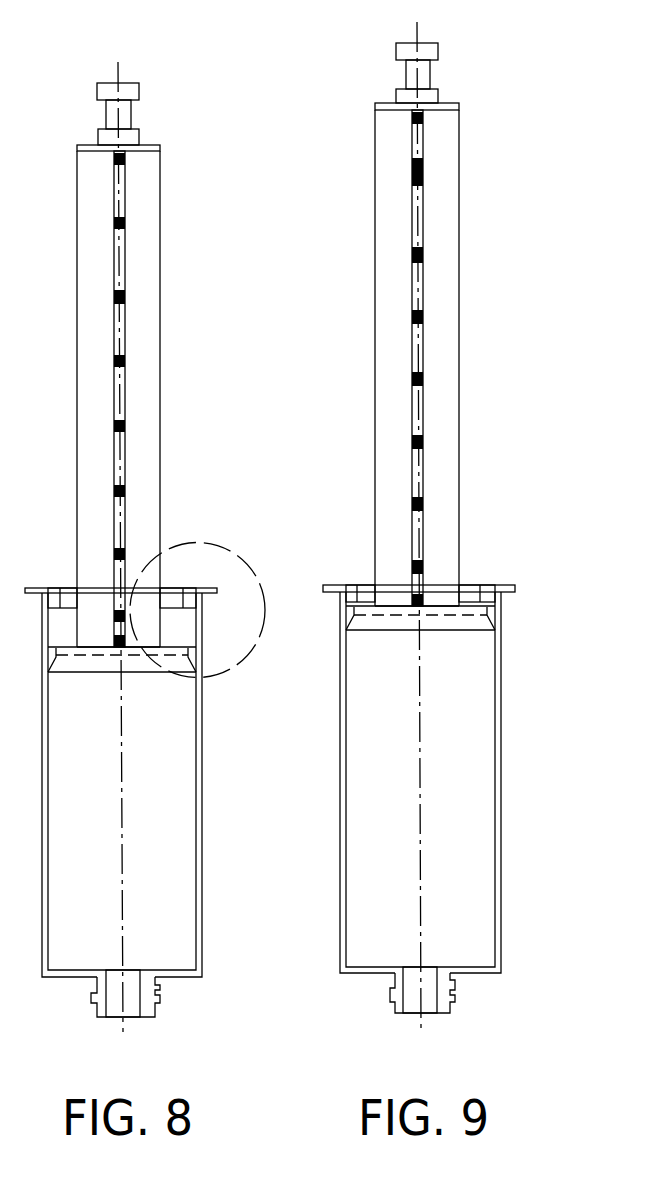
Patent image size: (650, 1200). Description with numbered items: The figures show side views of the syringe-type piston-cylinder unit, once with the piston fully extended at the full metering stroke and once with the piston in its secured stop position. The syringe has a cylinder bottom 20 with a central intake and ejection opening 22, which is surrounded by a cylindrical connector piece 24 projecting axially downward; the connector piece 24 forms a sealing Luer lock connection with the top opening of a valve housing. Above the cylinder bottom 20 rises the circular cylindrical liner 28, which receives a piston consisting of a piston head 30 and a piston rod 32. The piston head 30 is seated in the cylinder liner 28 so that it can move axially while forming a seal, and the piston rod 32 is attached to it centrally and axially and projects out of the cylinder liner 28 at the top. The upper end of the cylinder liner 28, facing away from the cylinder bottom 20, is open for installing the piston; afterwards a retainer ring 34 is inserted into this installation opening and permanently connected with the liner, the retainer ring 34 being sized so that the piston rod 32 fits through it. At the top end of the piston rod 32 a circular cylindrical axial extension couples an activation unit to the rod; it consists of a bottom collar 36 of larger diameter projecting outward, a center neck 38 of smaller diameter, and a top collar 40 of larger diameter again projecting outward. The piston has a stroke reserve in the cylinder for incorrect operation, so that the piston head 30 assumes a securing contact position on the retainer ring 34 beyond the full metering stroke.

In FIG. 8, the cylinder bottom 20 is at (73, 979).
In FIG. 9, the cylinder bottom 20 is at (372, 975).
In FIG. 8, the central intake and ejection opening 22 is at (128, 972).
In FIG. 9, the central intake and ejection opening 22 is at (427, 968).
In FIG. 8, the cylindrical connector piece 24 is at (157, 999).
In FIG. 9, the cylindrical connector piece 24 is at (452, 998).
In FIG. 9, the cylinder liner 28 is at (345, 800).
In FIG. 8, the piston head 30 is at (73, 674).
In FIG. 9, the piston head 30 is at (378, 632).
In FIG. 8, the piston rod 32 is at (150, 404).
In FIG. 9, the piston rod 32 is at (440, 277).
In FIG. 8, the retainer ring 34 is at (50, 588).
In FIG. 9, the retainer ring 34 is at (487, 585).
In FIG. 8, the bottom collar 36 is at (130, 138).
In FIG. 9, the bottom collar 36 is at (430, 97).
In FIG. 8, the center neck 38 is at (106, 110).
In FIG. 9, the center neck 38 is at (406, 70).
In FIG. 8, the top collar 40 is at (129, 91).
In FIG. 9, the top collar 40 is at (429, 51).